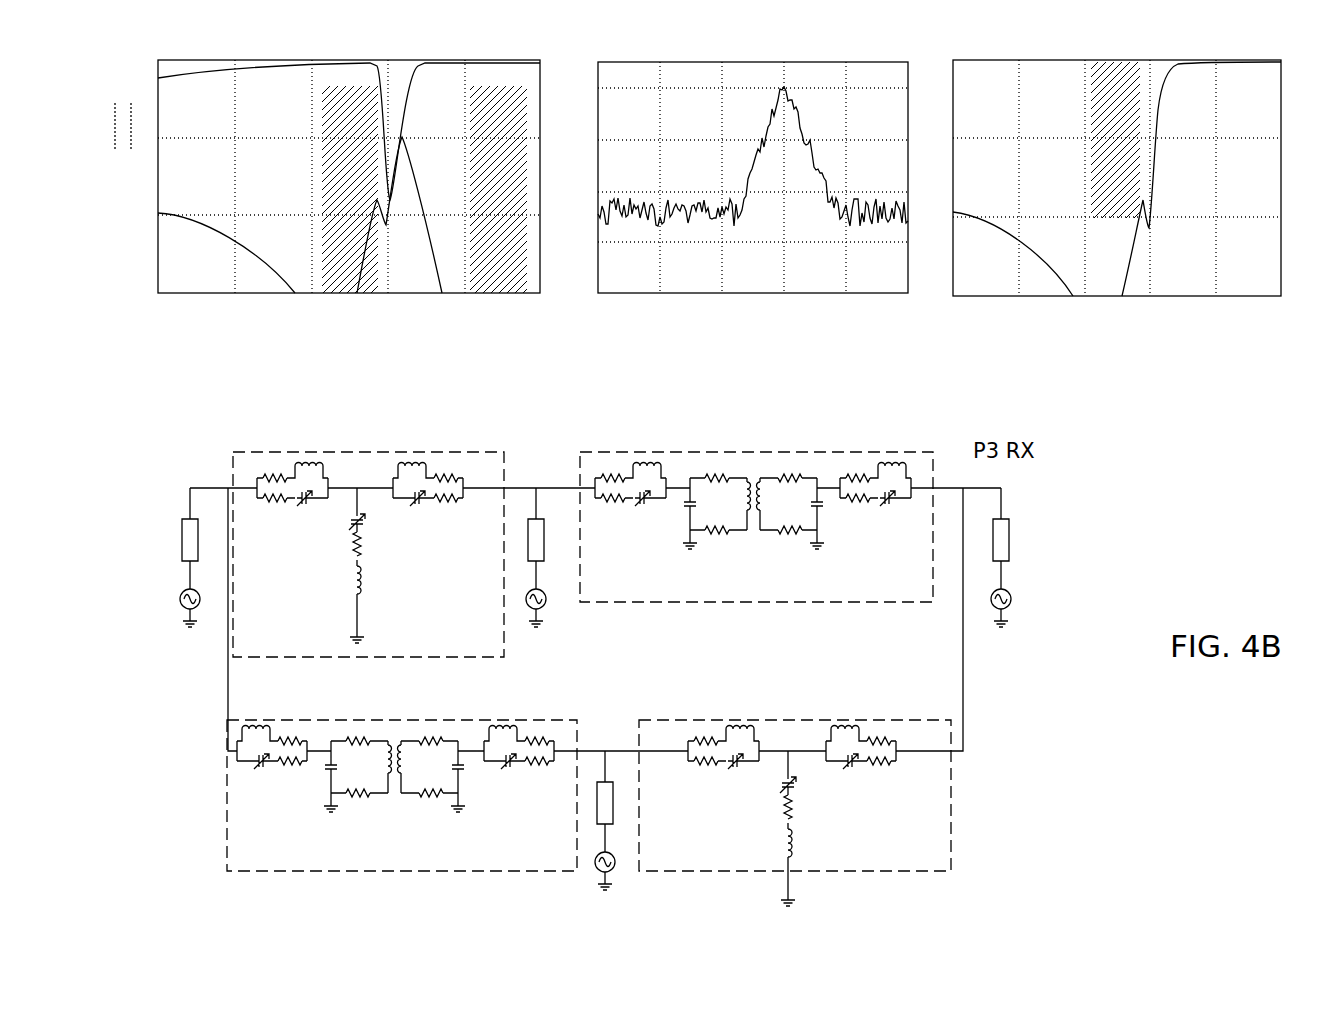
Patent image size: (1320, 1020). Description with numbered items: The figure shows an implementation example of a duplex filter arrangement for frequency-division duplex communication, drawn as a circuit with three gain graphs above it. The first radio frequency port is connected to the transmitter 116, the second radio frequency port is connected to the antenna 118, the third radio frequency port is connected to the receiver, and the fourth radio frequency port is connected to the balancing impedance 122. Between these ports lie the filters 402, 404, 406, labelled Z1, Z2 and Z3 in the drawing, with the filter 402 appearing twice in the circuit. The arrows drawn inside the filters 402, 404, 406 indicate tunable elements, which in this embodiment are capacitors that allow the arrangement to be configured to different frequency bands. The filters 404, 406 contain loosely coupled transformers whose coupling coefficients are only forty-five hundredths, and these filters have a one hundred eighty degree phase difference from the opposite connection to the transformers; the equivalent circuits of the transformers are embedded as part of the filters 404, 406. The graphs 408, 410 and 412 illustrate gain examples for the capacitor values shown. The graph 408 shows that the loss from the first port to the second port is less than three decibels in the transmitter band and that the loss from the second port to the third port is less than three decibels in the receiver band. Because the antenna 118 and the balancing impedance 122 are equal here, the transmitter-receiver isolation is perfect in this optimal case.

The transmitter 116 is at (130, 516).
The antenna 118 is at (540, 436).
The balancing impedance 122 is at (612, 693).
The filter 402 is at (362, 450).
The filter 404 is at (728, 451).
The filter 406 is at (227, 815).
The graph 408 is at (388, 60).
The graph 410 is at (752, 62).
The graph 412 is at (1057, 60).